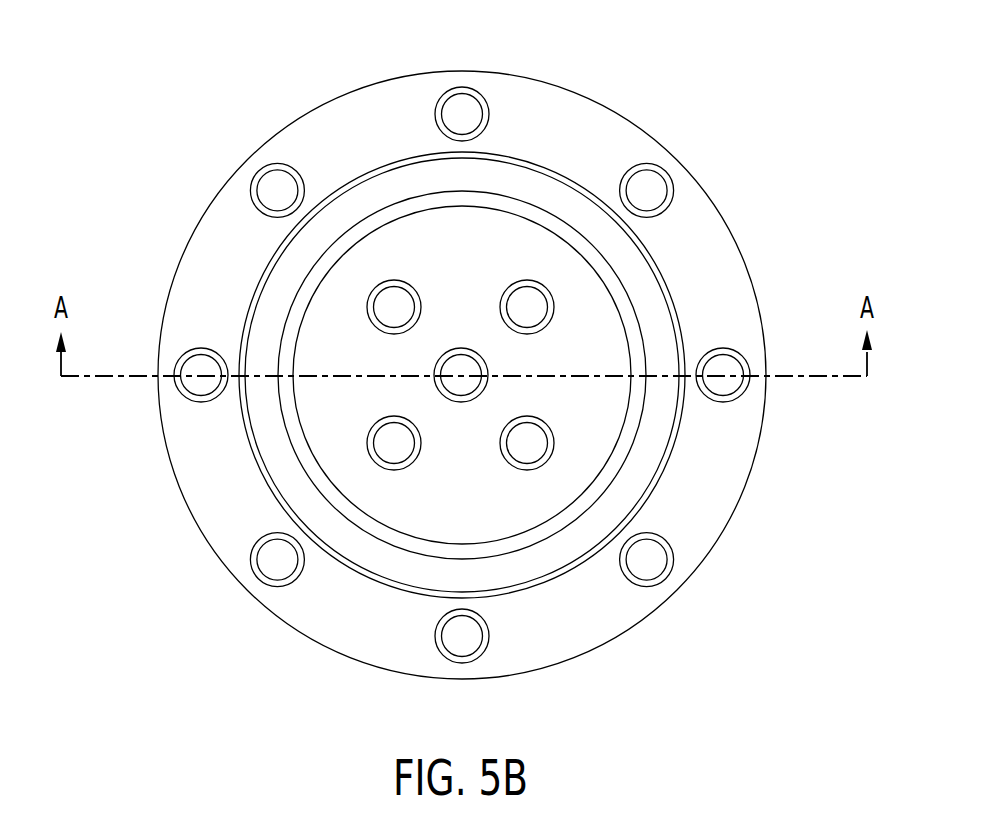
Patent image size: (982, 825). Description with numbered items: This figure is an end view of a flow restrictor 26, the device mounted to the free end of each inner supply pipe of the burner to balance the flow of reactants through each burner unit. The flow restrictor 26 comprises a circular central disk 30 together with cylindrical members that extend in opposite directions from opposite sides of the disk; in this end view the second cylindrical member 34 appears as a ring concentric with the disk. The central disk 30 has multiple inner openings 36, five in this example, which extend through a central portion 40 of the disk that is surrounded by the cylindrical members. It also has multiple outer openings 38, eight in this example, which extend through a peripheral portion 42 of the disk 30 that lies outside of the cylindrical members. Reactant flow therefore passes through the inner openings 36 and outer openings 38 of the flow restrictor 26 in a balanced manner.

The flow restrictor 26 is at (780, 136).
The circular central disk 30 is at (783, 312).
The second cylindrical member 34 is at (533, 167).
The inner openings 36 is at (527, 307).
The outer openings 38 is at (460, 114).
The central portion 40 is at (599, 417).
The peripheral portion 42 is at (714, 500).